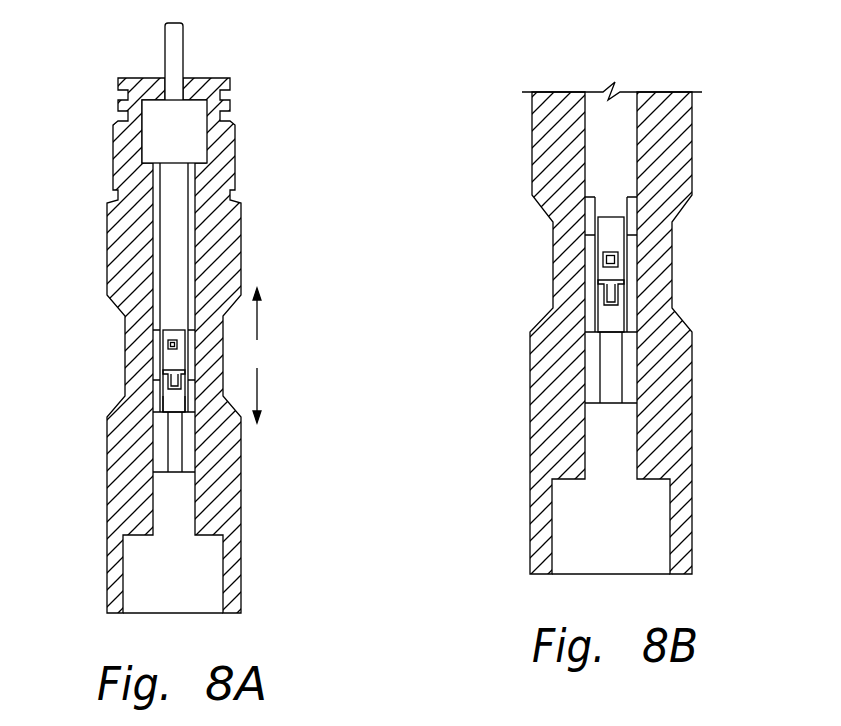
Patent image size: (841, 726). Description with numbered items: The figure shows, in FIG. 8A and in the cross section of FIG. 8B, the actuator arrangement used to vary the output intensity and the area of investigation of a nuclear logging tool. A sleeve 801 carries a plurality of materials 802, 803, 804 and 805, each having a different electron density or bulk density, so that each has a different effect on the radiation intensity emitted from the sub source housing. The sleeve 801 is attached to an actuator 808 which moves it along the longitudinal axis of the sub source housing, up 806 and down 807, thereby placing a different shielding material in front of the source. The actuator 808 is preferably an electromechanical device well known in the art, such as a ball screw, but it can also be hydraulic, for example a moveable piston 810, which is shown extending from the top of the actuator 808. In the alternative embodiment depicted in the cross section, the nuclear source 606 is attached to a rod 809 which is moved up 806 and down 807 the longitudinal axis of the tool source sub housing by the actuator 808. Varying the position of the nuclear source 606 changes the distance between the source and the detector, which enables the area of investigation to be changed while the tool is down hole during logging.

The sleeve 801 is at (155, 230).
The material 802 is at (160, 327).
The material 803 is at (160, 345).
The nuclear source 606 is at (167, 350).
The material 804 is at (160, 402).
The material 805 is at (160, 445).
The up direction 806 is at (257, 323).
The down direction 807 is at (257, 387).
The actuator 808 is at (178, 137).
The rod 809 is at (177, 248).
The moveable piston 810 is at (185, 43).